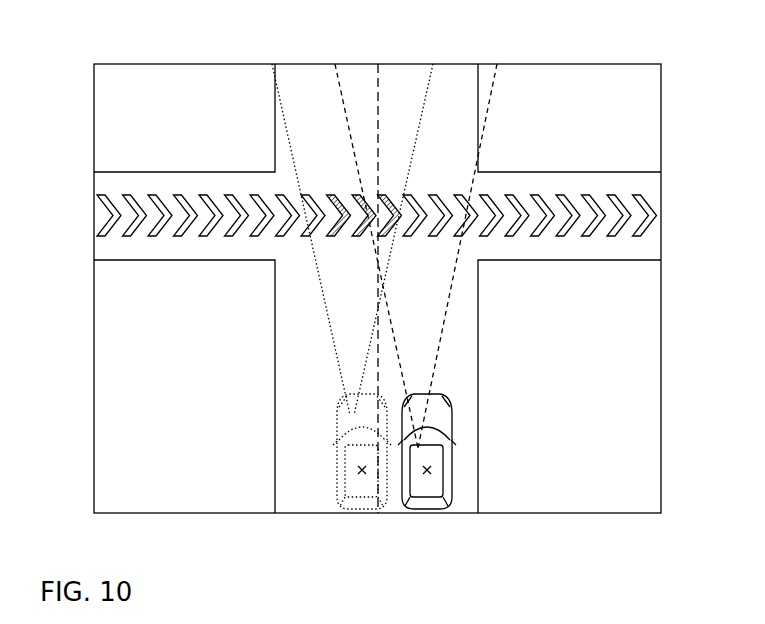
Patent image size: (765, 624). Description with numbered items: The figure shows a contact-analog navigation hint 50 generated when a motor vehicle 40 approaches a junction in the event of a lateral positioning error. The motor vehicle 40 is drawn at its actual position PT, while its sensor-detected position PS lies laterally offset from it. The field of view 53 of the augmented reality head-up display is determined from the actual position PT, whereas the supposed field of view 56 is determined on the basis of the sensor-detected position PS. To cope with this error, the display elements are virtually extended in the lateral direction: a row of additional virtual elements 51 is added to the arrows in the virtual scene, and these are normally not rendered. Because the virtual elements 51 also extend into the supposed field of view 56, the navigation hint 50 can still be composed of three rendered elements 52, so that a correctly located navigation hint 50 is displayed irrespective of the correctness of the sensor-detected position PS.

The motor vehicle 40 is at (442, 508).
The contact-analog navigation hint 50 is at (340, 183).
The virtual elements 51 is at (648, 228).
The rendered elements 52 is at (387, 198).
The field of view 53 is at (472, 182).
The supposed field of view 56 is at (297, 177).
The sensor-detected position PS is at (360, 477).
The actual position PT is at (425, 477).